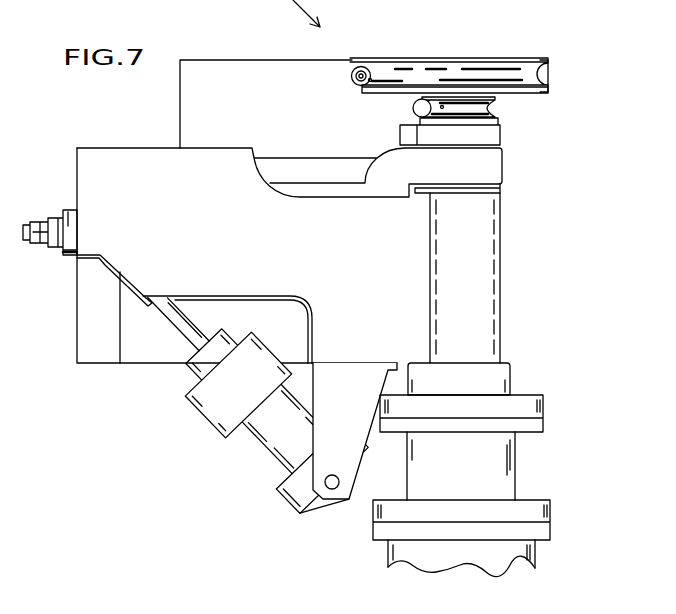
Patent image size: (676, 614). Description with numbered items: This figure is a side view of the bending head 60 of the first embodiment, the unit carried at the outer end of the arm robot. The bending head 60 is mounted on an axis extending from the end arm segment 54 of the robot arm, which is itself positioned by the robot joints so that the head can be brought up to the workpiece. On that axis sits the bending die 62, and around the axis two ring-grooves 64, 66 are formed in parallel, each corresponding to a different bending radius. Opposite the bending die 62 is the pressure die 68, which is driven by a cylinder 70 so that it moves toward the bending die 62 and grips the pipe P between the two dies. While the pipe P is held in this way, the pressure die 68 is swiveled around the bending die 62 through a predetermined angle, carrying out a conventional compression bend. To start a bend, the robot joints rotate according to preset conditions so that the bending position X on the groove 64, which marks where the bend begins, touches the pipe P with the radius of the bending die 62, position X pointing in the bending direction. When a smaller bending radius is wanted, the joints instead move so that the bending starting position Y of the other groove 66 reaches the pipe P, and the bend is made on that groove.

The end arm segment 54 is at (507, 553).
The bending head 60 is at (521, 290).
The bending die 62 is at (465, 62).
The ring-groove 64 is at (545, 77).
The ring-groove 66 is at (488, 108).
The pressure die 68 is at (200, 92).
The cylinder 70 is at (265, 435).
The pipe P is at (372, 69).
The bending position X is at (372, 80).
The bending starting position Y is at (443, 107).